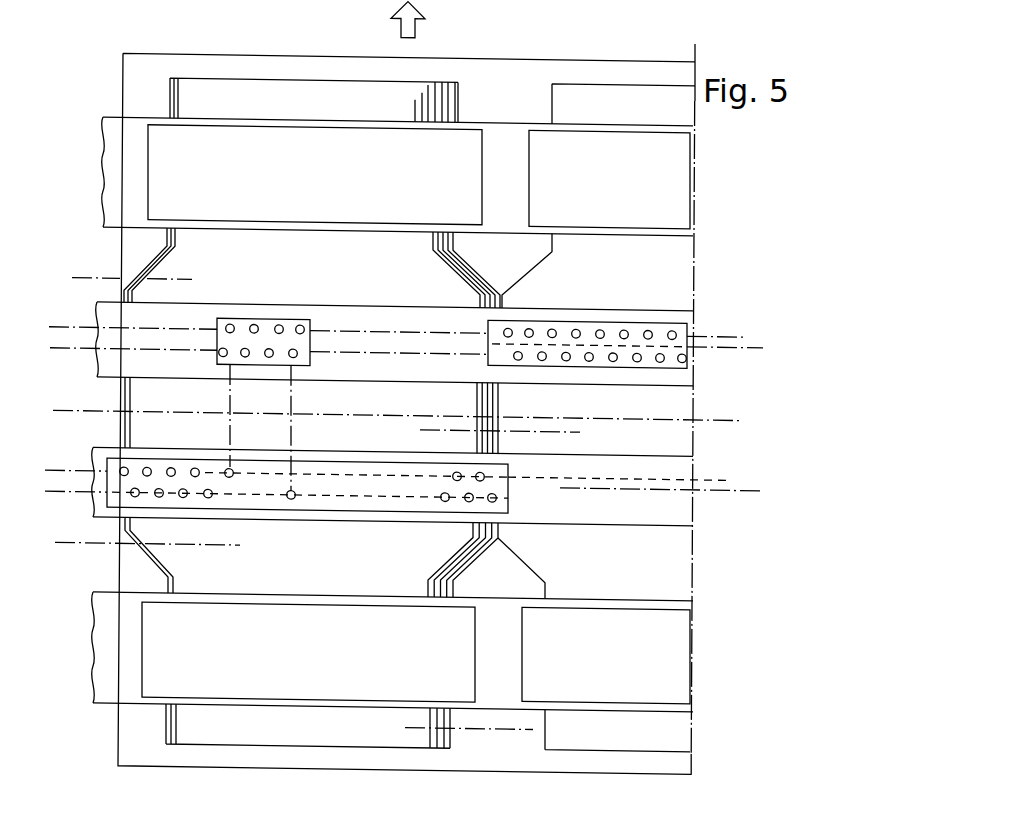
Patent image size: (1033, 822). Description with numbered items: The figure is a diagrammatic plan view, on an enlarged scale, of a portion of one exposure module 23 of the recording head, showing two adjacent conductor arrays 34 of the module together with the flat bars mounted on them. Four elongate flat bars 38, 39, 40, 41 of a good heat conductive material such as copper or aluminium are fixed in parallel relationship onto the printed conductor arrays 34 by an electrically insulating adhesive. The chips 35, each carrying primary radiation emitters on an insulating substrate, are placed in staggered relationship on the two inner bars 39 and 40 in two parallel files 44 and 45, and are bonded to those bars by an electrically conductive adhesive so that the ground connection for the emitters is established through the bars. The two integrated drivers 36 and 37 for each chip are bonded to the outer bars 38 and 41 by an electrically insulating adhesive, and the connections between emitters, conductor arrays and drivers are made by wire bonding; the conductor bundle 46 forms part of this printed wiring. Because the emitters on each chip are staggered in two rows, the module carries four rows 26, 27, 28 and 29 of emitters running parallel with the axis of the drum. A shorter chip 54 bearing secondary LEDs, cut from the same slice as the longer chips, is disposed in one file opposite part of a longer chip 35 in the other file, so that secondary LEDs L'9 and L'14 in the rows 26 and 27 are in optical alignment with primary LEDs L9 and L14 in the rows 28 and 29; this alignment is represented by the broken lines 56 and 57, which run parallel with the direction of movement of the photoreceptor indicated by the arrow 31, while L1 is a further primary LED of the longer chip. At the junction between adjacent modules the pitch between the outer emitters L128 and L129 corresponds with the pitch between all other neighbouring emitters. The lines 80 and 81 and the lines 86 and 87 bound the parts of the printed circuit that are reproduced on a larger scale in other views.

The exposure module 23 is at (155, 69).
The conductor array 34 is at (287, 87).
The conductor bundle 46 is at (420, 95).
The arrow 31 is at (413, 23).
The outer bar 38 is at (122, 157).
The integrated driver 36 is at (320, 185).
The line 80 is at (88, 278).
The inner bar 39 is at (103, 313).
The row of emitters 26 is at (58, 322).
The row of emitters 27 is at (55, 350).
The chip bearing secondary LEDs 54 is at (293, 315).
The secondary LED L'9 is at (219, 299).
The secondary LED L'14 is at (331, 311).
The file of chips 44 is at (753, 338).
The emitter L129 is at (510, 320).
The chip 35 is at (487, 325).
The broken line 56 is at (230, 384).
The broken line 57 is at (290, 385).
The line 86 is at (580, 429).
The row of emitters 28 is at (55, 463).
The row of emitters 29 is at (50, 492).
The inner bar 40 is at (97, 502).
The primary LED L1 is at (117, 467).
The primary LED L9 is at (227, 465).
The primary LED L14 is at (293, 487).
The emitter L128 is at (498, 491).
The file of chips 45 is at (740, 480).
The line 81 is at (97, 543).
The outer bar 41 is at (107, 650).
The integrated driver 37 is at (320, 658).
The line 87 is at (405, 723).